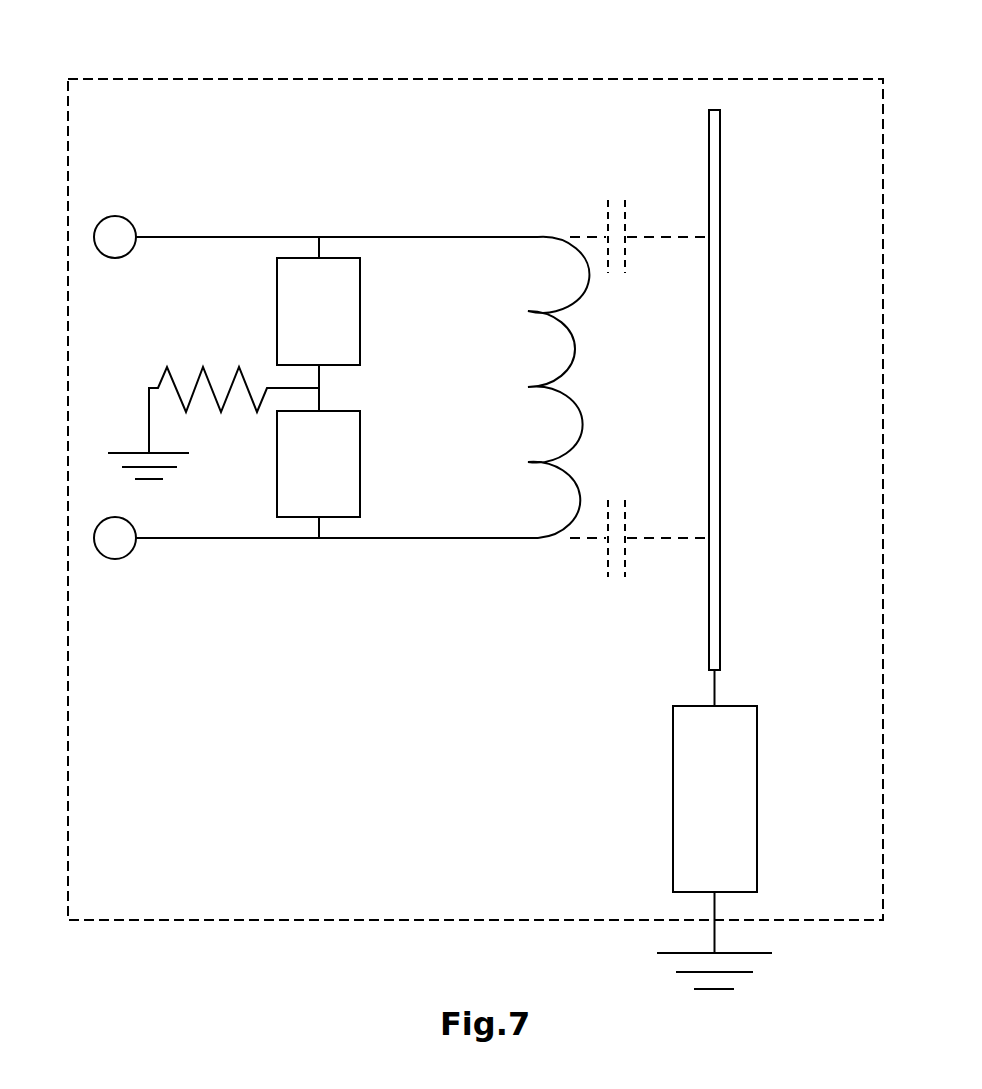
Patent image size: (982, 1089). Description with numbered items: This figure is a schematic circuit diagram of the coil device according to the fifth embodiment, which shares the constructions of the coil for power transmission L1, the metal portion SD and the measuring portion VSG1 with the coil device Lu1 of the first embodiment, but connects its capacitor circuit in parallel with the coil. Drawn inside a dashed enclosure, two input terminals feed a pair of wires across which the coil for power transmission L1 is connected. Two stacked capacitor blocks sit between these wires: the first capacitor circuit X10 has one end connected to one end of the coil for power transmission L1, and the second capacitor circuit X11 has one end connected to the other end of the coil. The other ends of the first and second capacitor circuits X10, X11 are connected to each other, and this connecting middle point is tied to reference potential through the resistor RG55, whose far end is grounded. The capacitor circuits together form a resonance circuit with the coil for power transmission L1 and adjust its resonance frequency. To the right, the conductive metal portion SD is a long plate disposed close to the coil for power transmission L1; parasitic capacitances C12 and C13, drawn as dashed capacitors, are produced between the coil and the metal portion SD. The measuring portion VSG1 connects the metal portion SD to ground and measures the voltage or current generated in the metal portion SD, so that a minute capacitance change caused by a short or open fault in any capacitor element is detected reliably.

The coil device Lu1 is at (563, 79).
The first capacitor circuit X10 is at (368, 311).
The second capacitor circuit X11 is at (346, 464).
The resistor RG55 is at (213, 408).
The coil for power transmission L1 is at (528, 387).
The parasitic capacitance C12 is at (639, 221).
The parasitic capacitance C13 is at (639, 558).
The metal portion SD is at (728, 481).
The measuring portion VSG1 is at (665, 799).